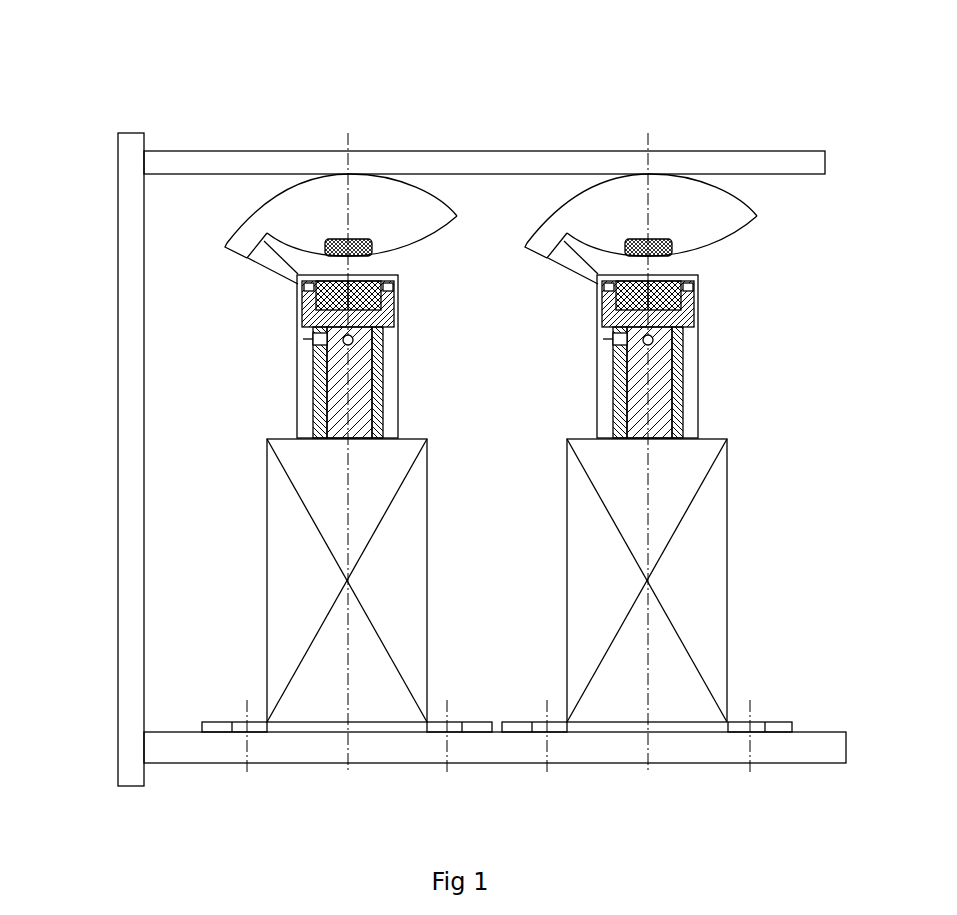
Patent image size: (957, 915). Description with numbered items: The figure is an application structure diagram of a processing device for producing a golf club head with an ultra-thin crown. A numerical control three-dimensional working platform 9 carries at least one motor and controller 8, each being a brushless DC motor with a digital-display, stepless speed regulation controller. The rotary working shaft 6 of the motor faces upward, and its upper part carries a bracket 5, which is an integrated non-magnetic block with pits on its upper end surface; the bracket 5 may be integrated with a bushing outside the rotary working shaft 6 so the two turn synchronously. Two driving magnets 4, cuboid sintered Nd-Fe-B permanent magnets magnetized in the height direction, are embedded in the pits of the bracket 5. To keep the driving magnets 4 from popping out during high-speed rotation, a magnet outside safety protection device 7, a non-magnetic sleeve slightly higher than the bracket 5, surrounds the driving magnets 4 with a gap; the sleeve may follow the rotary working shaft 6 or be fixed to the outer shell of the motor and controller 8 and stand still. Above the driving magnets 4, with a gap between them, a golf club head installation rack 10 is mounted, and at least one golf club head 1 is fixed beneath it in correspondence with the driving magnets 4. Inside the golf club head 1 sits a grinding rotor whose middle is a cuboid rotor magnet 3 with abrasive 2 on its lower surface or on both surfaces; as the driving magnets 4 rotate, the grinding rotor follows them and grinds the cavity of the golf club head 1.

The golf club head 1 is at (358, 198).
The abrasive 2 is at (355, 238).
The rotor magnet 3 is at (335, 247).
The driving magnets 4 is at (243, 257).
The bracket 5 is at (297, 313).
The rotary working shaft 6 is at (320, 348).
The magnet outside safety protection device 7 is at (297, 398).
The motor and controller 8 is at (313, 474).
The numerical control three-dimensional working platform 9 is at (210, 748).
The golf club head installation rack 10 is at (732, 160).